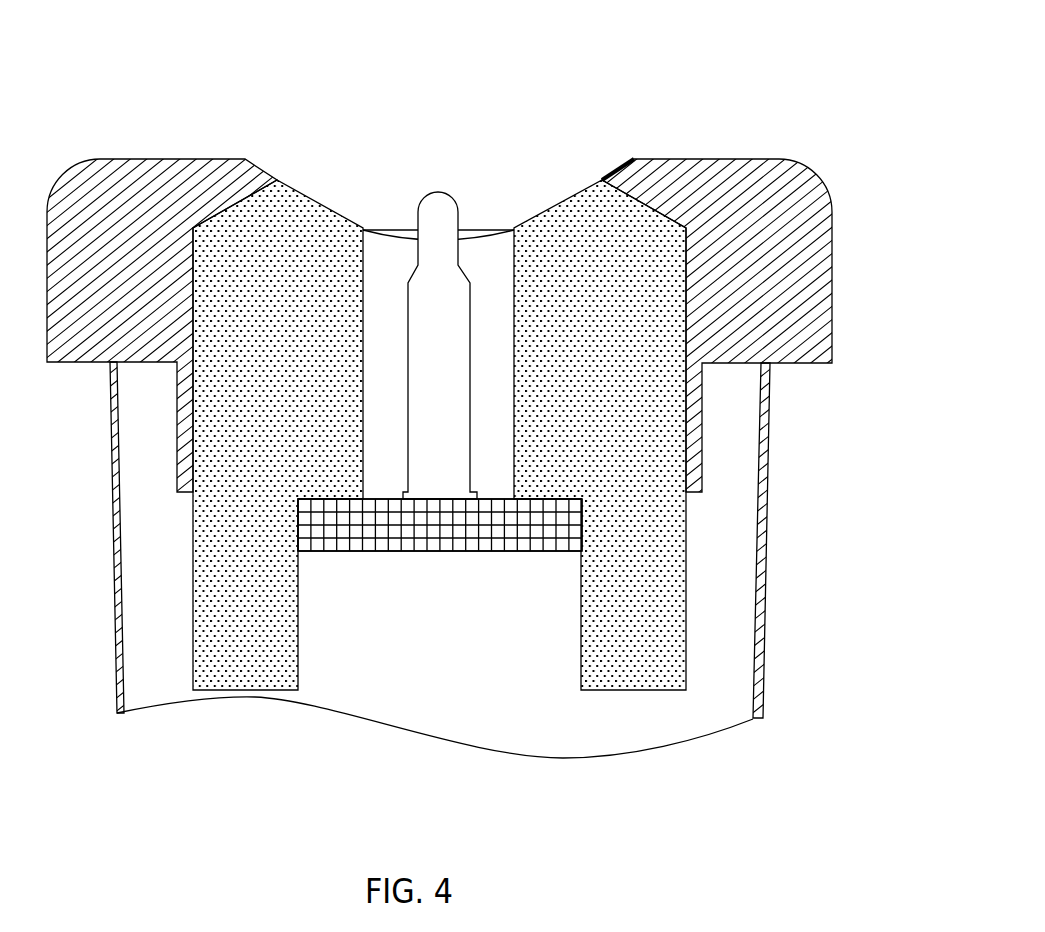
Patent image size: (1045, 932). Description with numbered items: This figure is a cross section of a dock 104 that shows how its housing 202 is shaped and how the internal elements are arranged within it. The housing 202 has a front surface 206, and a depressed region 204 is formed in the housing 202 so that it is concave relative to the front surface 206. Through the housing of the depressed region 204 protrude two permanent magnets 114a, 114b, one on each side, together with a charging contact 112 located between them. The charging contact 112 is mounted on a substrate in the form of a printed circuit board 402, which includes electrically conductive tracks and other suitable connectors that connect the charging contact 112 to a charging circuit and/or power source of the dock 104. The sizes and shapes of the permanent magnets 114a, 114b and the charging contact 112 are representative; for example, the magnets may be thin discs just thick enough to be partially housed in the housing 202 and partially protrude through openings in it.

The dock 104 is at (652, 41).
The charging contact 112 is at (440, 190).
The permanent magnet 114a is at (528, 216).
The permanent magnet 114b is at (318, 202).
The housing 202 is at (774, 583).
The depressed region 204 is at (607, 168).
The front surface 206 is at (140, 158).
The printed circuit board 402 is at (478, 552).